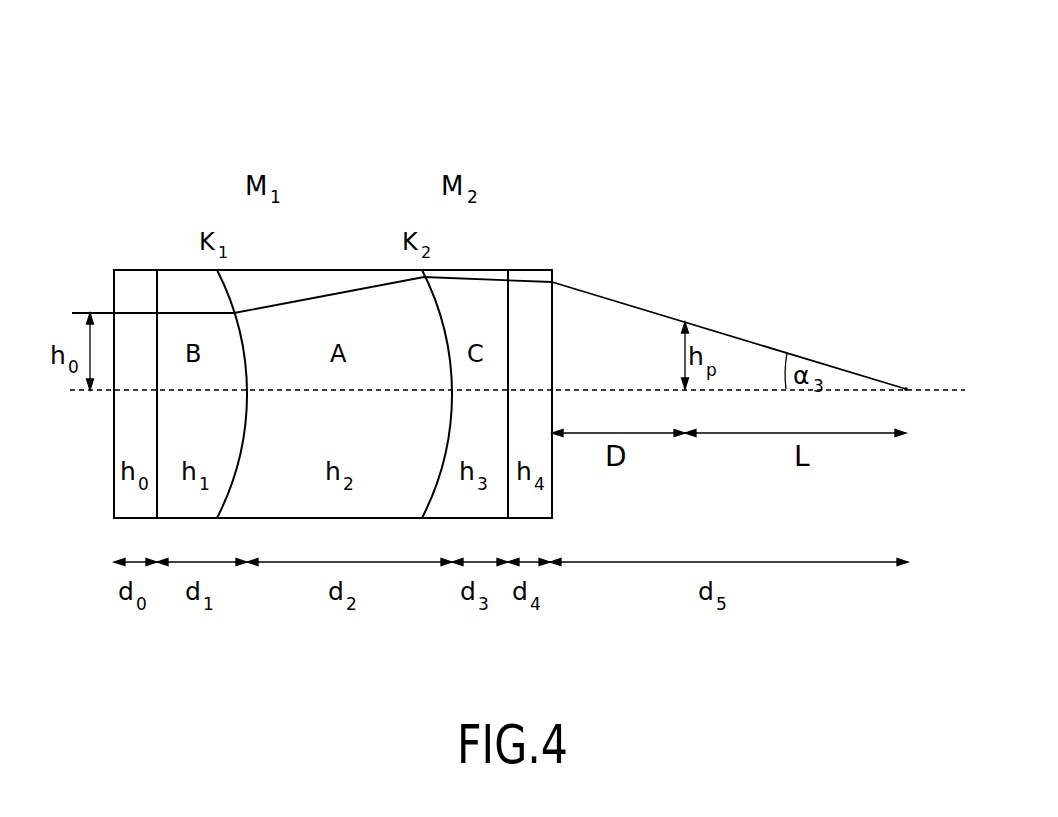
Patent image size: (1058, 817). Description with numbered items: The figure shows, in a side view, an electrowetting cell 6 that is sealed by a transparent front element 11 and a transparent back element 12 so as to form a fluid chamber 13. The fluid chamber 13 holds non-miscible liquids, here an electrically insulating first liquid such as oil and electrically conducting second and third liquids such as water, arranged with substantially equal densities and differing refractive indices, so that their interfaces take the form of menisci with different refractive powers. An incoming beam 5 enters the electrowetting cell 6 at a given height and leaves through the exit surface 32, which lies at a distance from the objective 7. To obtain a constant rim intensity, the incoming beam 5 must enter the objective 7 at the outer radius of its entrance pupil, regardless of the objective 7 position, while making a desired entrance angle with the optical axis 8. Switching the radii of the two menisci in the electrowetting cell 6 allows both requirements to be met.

The incoming beam 5 is at (97, 306).
The electrowetting cell 6 is at (337, 262).
The objective 7 is at (690, 326).
The optical axis 8 is at (920, 388).
The transparent front element 11 is at (131, 285).
The transparent back element 12 is at (526, 274).
The fluid chamber 13 is at (274, 287).
The exit surface 32 is at (554, 272).